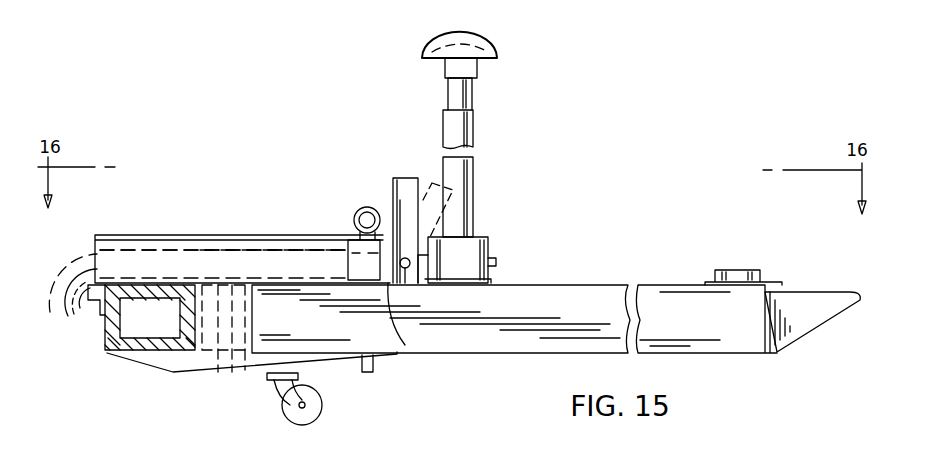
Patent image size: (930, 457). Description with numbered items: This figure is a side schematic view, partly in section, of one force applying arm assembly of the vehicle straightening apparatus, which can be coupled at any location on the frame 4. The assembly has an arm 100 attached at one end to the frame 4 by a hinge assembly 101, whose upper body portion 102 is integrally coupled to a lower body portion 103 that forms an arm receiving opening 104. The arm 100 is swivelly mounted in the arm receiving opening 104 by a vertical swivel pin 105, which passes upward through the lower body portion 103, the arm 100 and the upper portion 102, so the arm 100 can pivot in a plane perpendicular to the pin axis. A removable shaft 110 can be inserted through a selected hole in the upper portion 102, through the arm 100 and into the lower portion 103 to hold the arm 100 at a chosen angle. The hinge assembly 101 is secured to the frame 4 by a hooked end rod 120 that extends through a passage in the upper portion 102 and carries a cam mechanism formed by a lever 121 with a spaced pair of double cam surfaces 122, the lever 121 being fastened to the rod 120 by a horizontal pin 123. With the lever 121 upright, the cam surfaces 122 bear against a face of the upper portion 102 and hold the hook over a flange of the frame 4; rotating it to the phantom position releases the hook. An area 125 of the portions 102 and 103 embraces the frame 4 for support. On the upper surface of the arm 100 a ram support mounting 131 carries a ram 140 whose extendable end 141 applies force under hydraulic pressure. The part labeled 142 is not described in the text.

The frame 4 is at (107, 353).
The arm 100 is at (590, 288).
The hinge assembly 101 is at (197, 253).
The upper body portion 102 is at (292, 253).
The lower body portion 103 is at (215, 362).
The arm receiving opening 104 is at (337, 352).
The vertical swivel pin 105 is at (237, 283).
The removable shaft 110 is at (354, 208).
The hooked end rod 120 is at (150, 253).
The lever 121 is at (72, 312).
The double cam surfaces 122 is at (390, 283).
The horizontal pin 123 is at (405, 270).
The area embracing frame 125 is at (157, 352).
The ram support mounting 131 is at (733, 268).
The ram 140 is at (473, 168).
The extendable end 141 is at (487, 40).
The set screw 142 is at (496, 262).